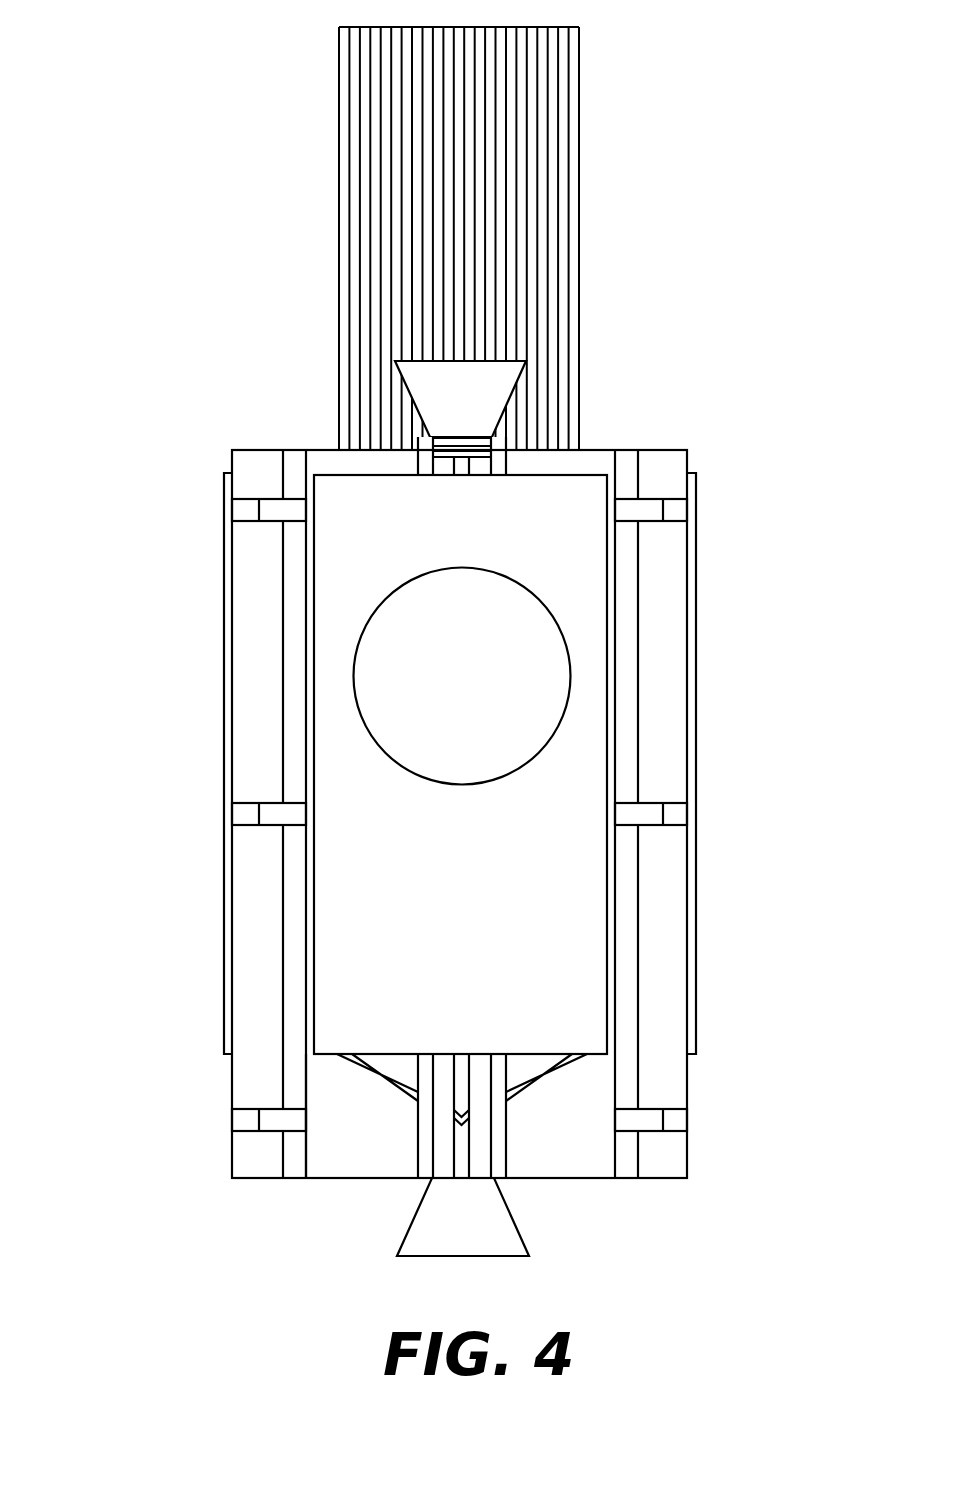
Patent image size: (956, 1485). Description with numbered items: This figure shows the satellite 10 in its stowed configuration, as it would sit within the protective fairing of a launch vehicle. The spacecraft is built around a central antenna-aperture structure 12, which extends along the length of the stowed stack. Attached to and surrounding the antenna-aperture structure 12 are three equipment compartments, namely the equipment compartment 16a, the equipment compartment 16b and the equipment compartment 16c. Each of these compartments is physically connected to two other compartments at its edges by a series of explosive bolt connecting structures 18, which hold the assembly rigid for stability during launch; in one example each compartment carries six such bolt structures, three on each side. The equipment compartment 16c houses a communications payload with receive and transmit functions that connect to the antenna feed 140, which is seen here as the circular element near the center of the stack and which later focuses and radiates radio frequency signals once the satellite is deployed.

The satellite 10 is at (437, 643).
The antenna-aperture structure 12 is at (573, 146).
The equipment compartment 16a is at (350, 1150).
The equipment compartment 16b is at (250, 649).
The equipment compartment 16c is at (670, 648).
The explosive bolt connecting structure 18 is at (243, 511).
The antenna feed 140 is at (437, 694).